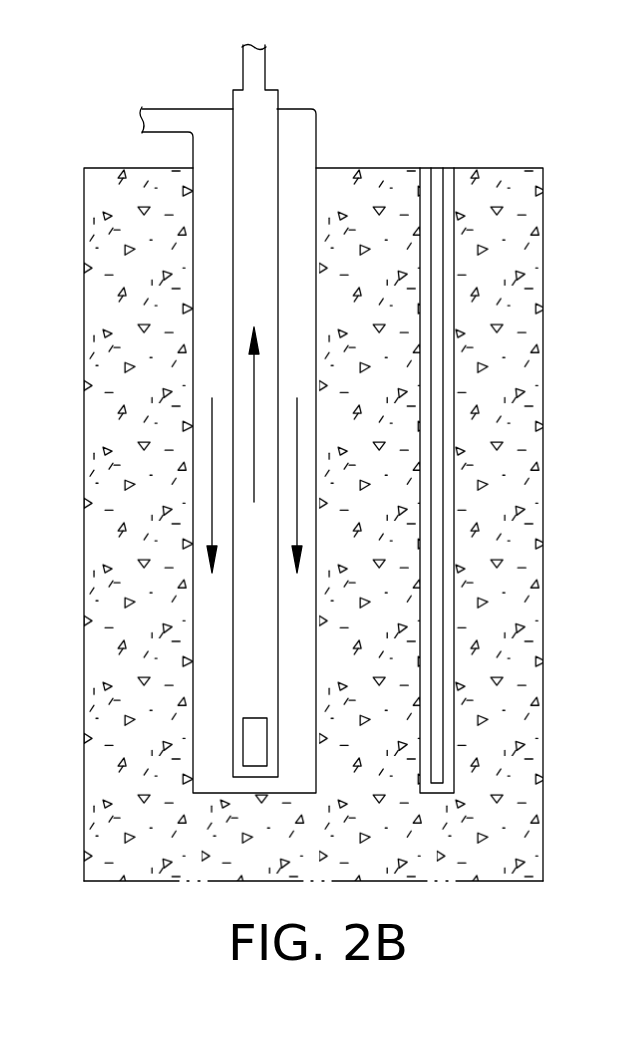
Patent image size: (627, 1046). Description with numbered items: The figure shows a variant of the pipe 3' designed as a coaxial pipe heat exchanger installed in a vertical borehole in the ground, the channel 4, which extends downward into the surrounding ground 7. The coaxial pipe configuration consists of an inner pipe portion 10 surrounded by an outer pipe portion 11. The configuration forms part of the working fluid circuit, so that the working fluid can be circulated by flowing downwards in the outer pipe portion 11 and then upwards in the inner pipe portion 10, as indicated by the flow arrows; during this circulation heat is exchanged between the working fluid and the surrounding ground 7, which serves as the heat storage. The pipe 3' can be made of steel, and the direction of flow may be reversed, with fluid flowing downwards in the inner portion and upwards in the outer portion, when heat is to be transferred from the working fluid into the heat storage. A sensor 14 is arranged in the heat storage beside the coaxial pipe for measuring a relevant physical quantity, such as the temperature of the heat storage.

The ground 7 is at (133, 541).
The outer pipe portion 11 is at (218, 668).
The inner pipe portion 10 is at (253, 158).
The channel 4 is at (218, 757).
The sensor 14 is at (437, 243).
The pipe 3' is at (162, 415).